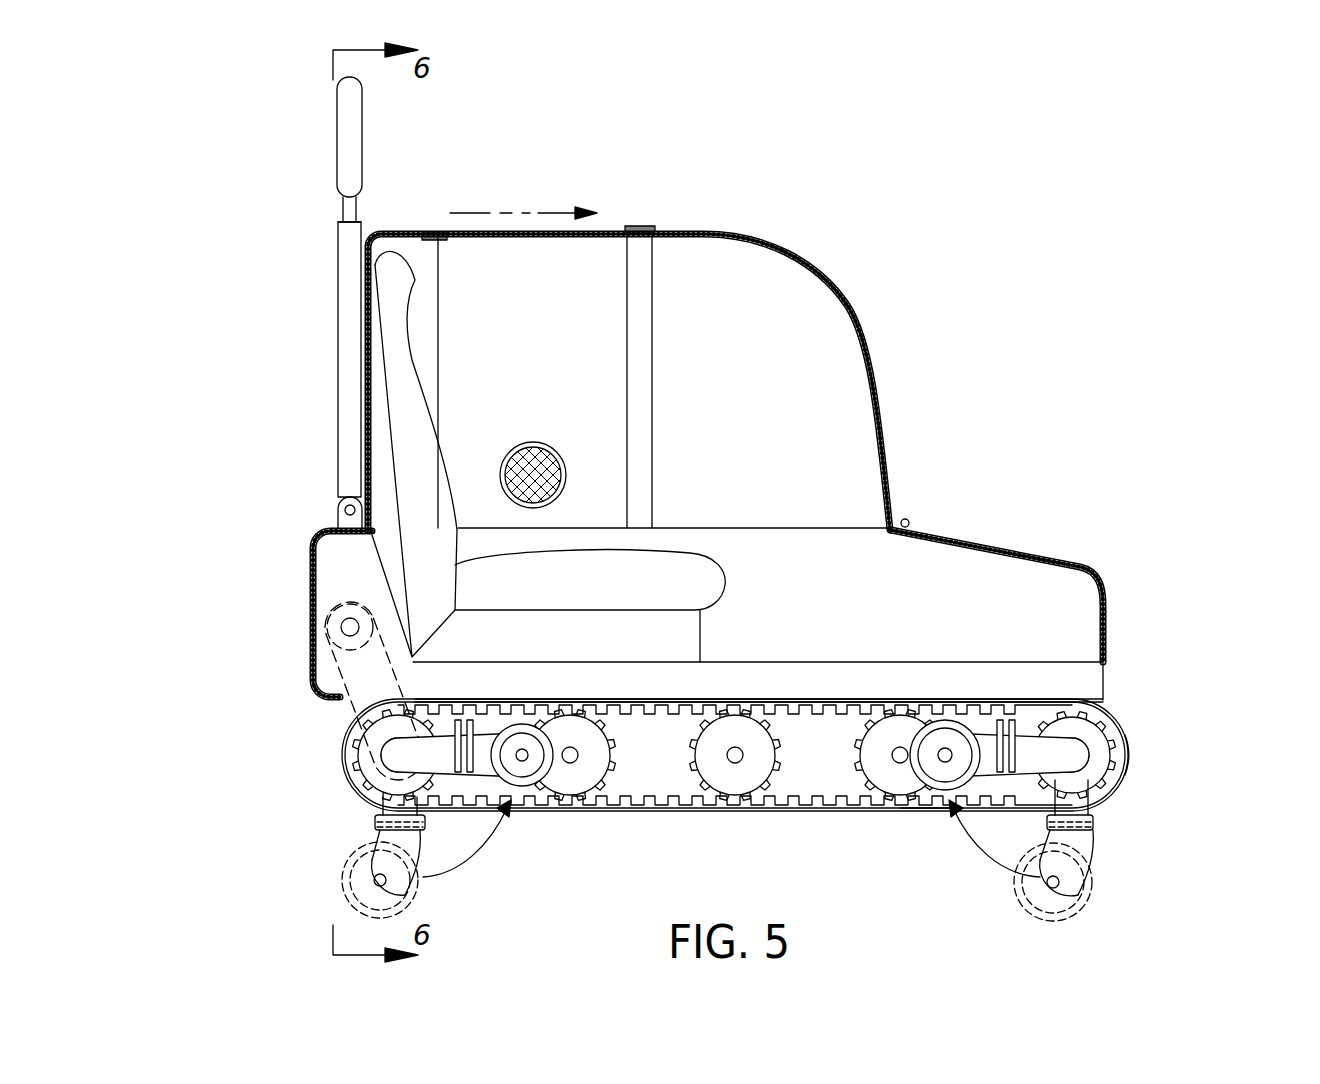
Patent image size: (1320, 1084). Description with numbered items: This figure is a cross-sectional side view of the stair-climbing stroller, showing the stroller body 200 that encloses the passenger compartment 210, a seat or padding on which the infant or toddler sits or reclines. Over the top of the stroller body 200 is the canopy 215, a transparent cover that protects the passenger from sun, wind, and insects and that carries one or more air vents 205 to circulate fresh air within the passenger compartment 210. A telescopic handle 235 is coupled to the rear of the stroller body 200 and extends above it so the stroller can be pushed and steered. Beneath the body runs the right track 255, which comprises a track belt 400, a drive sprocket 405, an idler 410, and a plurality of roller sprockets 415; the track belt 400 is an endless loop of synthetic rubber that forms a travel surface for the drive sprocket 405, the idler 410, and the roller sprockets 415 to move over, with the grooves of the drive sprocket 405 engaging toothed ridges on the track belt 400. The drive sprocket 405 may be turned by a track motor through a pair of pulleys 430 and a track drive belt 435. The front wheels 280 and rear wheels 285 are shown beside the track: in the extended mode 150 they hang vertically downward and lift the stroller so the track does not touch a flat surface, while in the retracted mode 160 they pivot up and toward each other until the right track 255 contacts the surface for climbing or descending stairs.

The extended mode 150 is at (1108, 902).
The retracted mode 160 is at (920, 840).
The stroller body 200 is at (1083, 567).
The air vents 205 is at (540, 455).
The passenger compartment 210 is at (535, 568).
The canopy 215 is at (840, 292).
The telescopic handle 235 is at (343, 270).
The right track 255 is at (1123, 740).
The front wheels 280 is at (958, 732).
The rear wheels 285 is at (530, 788).
The track belt 400 is at (642, 803).
The drive sprocket 405 is at (360, 768).
The idler 410 is at (1093, 738).
The roller sprockets 415 is at (890, 732).
The pulleys 430 is at (373, 753).
The track drive belt 435 is at (350, 603).